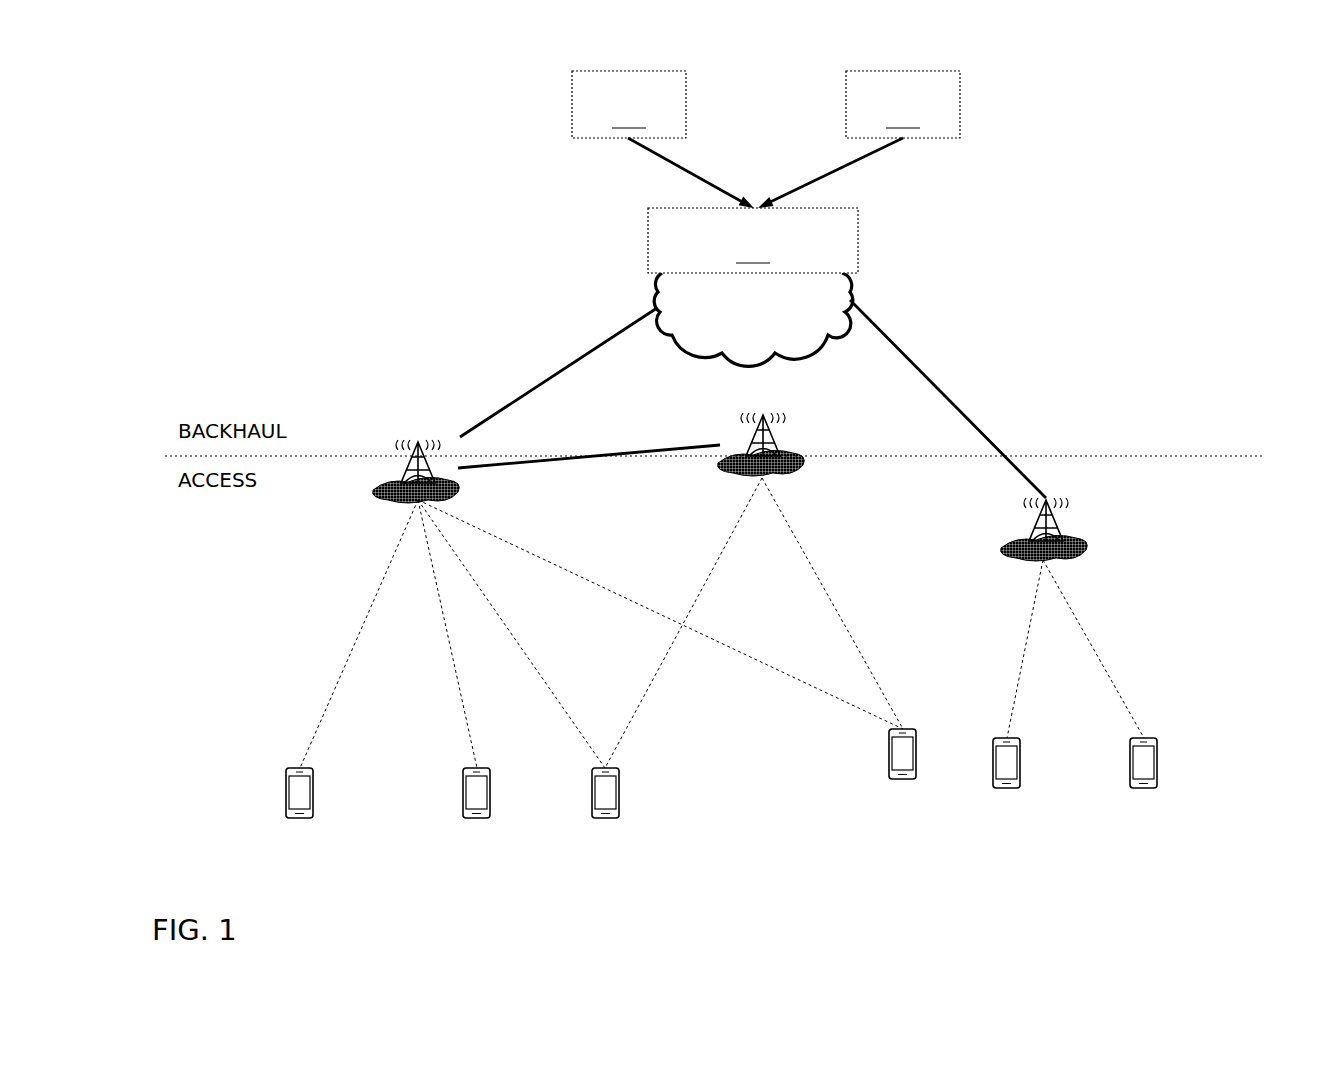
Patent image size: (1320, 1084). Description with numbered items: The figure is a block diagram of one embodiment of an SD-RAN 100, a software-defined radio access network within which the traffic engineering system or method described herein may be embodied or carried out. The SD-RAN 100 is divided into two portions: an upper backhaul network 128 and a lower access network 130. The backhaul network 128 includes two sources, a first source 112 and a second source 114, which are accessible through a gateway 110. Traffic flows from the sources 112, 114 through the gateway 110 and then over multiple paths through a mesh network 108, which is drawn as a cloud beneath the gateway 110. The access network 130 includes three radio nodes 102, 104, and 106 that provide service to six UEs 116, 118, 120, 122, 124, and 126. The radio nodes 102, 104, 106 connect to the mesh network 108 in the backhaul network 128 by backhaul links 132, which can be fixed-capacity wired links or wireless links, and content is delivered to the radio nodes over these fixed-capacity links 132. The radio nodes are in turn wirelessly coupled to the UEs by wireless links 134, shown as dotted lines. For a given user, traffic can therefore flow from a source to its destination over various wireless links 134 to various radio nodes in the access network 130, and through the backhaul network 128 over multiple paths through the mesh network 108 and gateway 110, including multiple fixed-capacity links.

The SD-RAN 100 is at (250, 162).
The radio node 102 is at (373, 472).
The radio node 104 is at (807, 447).
The radio node 106 is at (1087, 528).
The mesh network 108 is at (657, 305).
The gateway 110 is at (753, 240).
The source 112 is at (629, 104).
The source 114 is at (903, 104).
The UE 116 is at (323, 793).
The UE 118 is at (500, 793).
The UE 120 is at (628, 793).
The UE 122 is at (878, 752).
The UE 124 is at (1028, 760).
The UE 126 is at (1168, 762).
The backhaul network 128 is at (980, 268).
The access network 130 is at (307, 608).
The backhaul links 132 is at (983, 430).
The wireless links 134 is at (1103, 677).